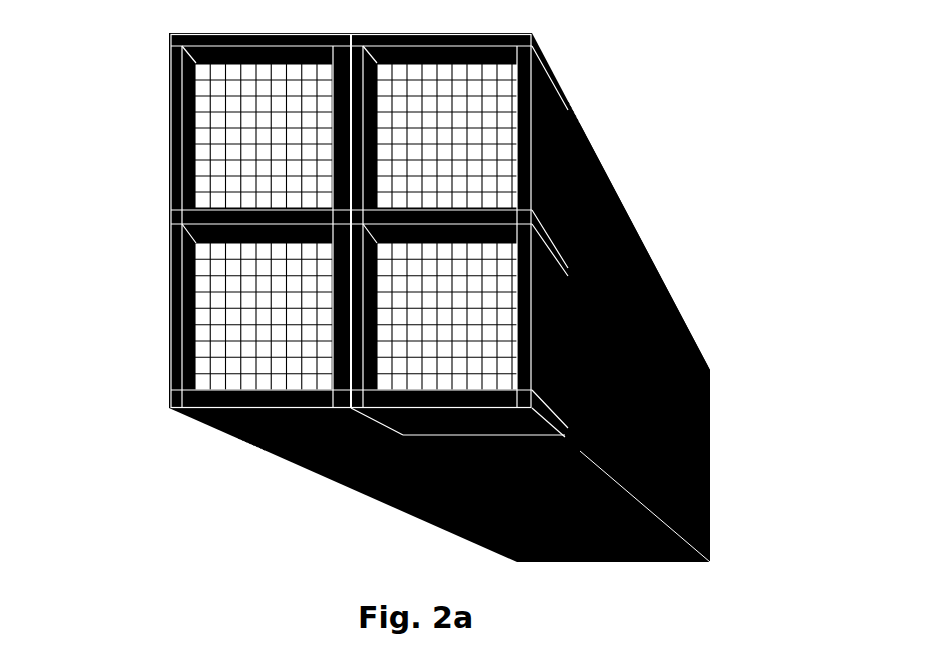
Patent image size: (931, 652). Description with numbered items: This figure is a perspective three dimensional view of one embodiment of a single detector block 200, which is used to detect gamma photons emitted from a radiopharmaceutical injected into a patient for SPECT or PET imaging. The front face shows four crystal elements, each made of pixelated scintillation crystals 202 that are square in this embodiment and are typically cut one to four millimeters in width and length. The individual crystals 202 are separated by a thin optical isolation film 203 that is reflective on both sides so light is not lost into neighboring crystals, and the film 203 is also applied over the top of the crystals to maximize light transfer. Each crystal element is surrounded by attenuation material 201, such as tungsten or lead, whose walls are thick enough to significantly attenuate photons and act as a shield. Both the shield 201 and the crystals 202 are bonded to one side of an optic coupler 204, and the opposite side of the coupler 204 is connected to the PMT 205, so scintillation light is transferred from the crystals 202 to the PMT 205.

The detector block 200 is at (162, 416).
The attenuation material 201 is at (553, 70).
The scintillation crystals 202 is at (250, 286).
The optical isolation film 203 is at (170, 92).
The optic coupler 204 is at (577, 117).
The PMT 205 is at (653, 262).